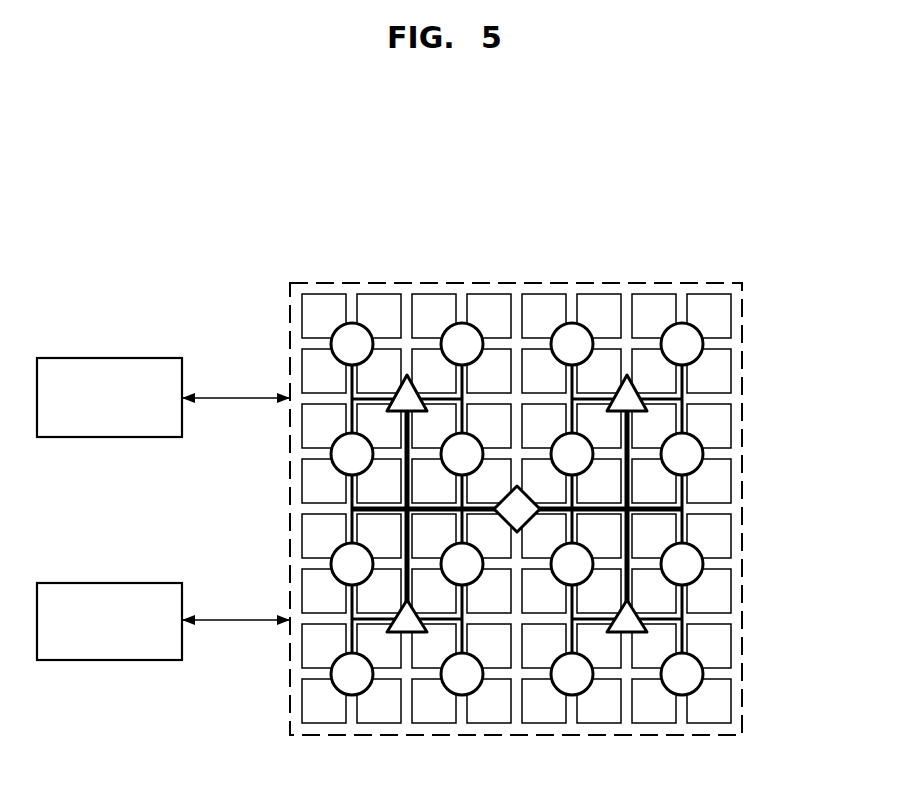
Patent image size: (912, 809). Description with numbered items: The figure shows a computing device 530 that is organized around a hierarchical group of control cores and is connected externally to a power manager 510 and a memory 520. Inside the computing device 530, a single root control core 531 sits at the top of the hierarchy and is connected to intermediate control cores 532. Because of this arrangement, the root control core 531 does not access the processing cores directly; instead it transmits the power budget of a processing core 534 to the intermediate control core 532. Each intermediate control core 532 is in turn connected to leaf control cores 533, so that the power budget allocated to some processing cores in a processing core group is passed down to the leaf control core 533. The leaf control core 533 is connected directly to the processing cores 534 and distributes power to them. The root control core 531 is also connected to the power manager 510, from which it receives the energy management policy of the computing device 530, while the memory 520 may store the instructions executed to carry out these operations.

The power manager 510 is at (125, 358).
The memory 520 is at (125, 583).
The computing device 530 is at (663, 283).
The root control core 531 is at (526, 497).
The intermediate control core 532 is at (642, 388).
The leaf control core 533 is at (695, 345).
The processing core 534 is at (732, 318).